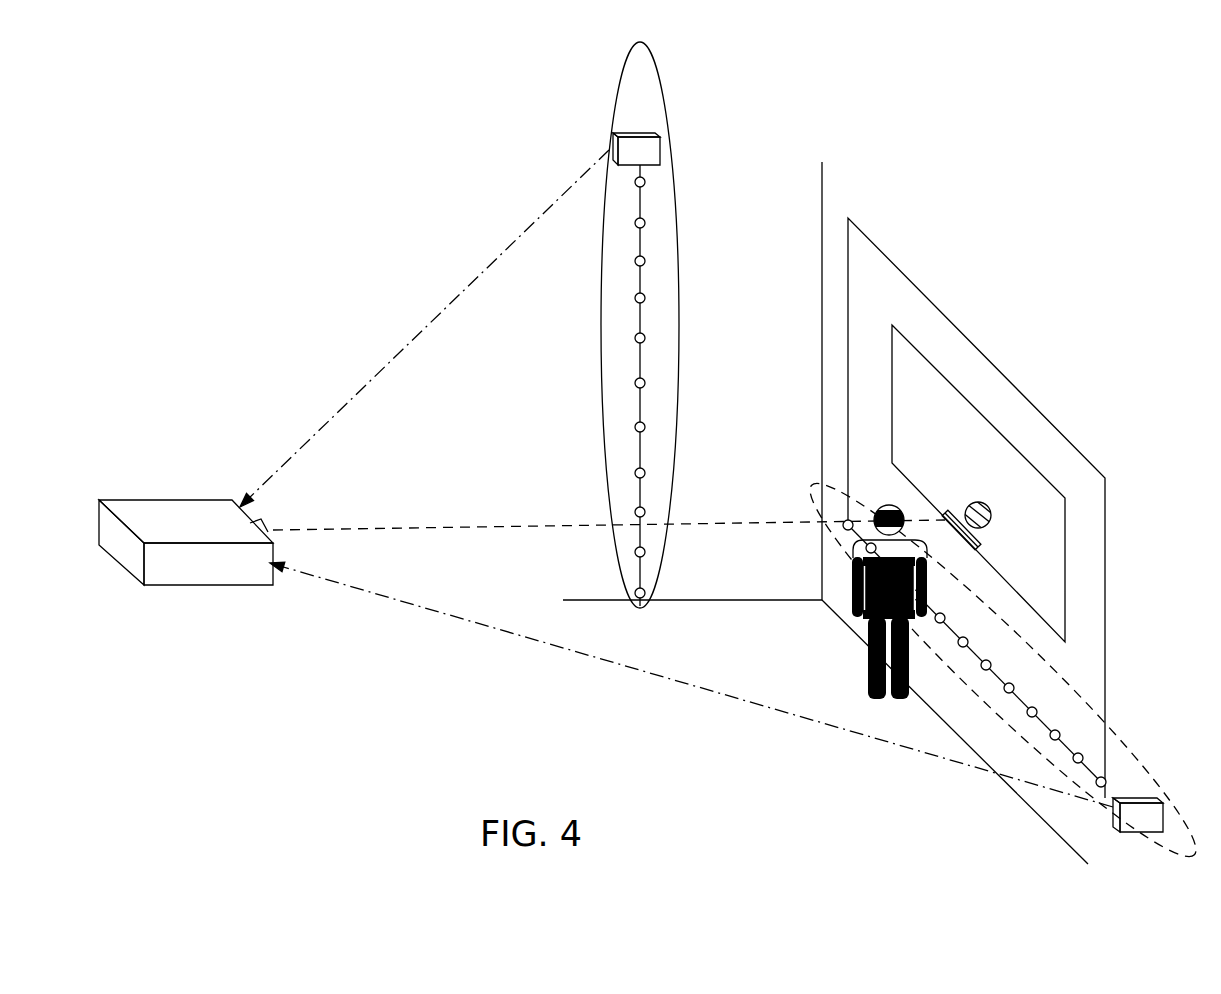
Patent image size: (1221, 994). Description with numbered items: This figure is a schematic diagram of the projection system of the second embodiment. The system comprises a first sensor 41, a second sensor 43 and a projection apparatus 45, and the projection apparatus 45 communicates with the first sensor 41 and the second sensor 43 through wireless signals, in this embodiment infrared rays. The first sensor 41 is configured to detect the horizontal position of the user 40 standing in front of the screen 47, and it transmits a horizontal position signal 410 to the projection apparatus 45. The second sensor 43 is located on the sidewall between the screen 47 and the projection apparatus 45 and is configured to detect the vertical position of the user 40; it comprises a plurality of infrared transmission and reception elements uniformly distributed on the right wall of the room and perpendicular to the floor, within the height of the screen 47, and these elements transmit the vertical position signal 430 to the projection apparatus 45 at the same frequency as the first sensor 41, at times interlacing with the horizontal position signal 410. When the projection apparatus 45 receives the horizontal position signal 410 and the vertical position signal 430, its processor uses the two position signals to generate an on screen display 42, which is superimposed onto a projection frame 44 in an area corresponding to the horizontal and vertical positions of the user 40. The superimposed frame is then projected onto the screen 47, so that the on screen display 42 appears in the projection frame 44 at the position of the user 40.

The user 40 is at (871, 666).
The first sensor 41 is at (1143, 773).
The horizontal position signal 410 is at (723, 683).
The on screen display (OSD) 42 is at (893, 507).
The second sensor 43 is at (678, 247).
The vertical position signal 430 is at (451, 292).
The projection frame 44 is at (963, 396).
The projection apparatus 45 is at (138, 497).
The screen 47 is at (1050, 425).